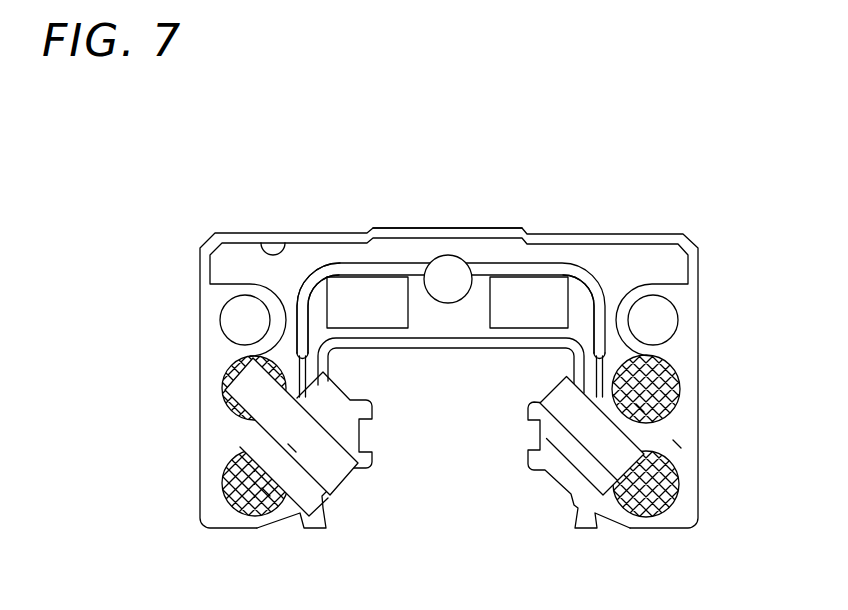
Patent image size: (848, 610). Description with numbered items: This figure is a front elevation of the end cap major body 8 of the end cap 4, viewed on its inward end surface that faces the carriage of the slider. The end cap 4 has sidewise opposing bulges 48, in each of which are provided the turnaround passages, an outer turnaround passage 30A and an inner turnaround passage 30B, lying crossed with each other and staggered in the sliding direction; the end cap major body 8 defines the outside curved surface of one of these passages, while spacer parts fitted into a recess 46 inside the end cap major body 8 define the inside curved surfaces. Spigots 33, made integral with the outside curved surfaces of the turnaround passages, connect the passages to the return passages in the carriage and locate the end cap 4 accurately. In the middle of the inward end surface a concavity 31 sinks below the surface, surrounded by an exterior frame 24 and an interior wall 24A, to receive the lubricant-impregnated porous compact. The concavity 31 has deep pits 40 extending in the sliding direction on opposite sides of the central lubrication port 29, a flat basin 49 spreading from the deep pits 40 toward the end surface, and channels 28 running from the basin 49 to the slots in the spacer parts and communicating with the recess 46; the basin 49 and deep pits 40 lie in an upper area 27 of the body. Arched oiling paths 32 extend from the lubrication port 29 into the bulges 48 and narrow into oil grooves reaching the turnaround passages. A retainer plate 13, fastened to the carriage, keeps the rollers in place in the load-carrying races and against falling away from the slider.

The end cap 4 is at (449, 333).
The end cap major body 8 is at (593, 223).
The retainer plate 13 is at (366, 462).
The exterior frame 24 is at (342, 237).
The interior wall 24A is at (440, 345).
The upper area 27 is at (552, 236).
The channels 28 is at (297, 352).
The lubrication port 29 is at (450, 273).
The outer turnaround passage 30A is at (328, 470).
The inner turnaround passage 30B is at (245, 488).
The concavity 31 is at (262, 250).
The oiling paths 32 is at (300, 320).
The spigots 33 is at (230, 385).
The deep pits 40 is at (387, 292).
The recess 46 is at (292, 445).
The bulges 48 is at (220, 437).
The basin 49 is at (325, 260).